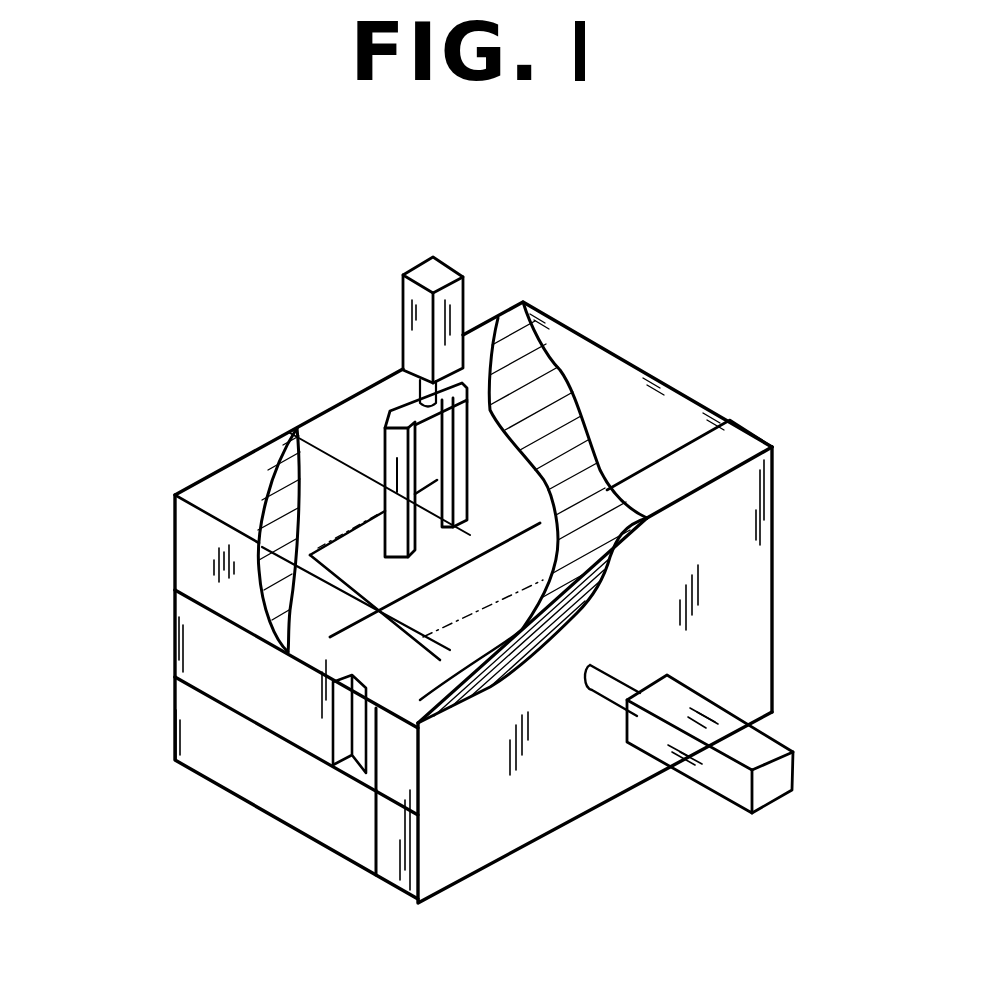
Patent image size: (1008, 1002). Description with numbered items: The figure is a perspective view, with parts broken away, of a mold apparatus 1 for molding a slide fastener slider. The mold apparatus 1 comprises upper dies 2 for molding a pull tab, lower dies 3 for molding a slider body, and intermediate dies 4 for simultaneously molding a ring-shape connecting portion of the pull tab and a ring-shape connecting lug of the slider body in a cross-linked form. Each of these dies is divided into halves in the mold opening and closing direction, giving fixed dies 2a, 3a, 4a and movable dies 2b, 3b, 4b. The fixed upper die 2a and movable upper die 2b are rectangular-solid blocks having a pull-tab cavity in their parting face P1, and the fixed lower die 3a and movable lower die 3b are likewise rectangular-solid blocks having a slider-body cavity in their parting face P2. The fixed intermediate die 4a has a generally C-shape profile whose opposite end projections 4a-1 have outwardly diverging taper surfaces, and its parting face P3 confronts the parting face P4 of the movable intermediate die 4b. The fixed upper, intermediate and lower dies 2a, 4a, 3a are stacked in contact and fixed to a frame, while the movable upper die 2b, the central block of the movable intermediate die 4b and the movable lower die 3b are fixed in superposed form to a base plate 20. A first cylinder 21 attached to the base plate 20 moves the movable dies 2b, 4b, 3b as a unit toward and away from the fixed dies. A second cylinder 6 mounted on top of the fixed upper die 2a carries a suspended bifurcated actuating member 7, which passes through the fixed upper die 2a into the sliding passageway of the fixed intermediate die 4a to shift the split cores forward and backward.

The mold apparatus 1 is at (231, 399).
The upper dies 2 is at (174, 540).
The fixed upper die 2a is at (570, 363).
The movable upper die 2b is at (673, 417).
The lower dies 3 is at (164, 705).
The fixed lower die 3a is at (188, 736).
The movable lower die 3b is at (365, 845).
The intermediate dies 4 is at (171, 628).
The fixed intermediate die 4a is at (247, 690).
The opposite end projections 4a-1 is at (276, 722).
The movable intermediate die 4b is at (365, 778).
The second cylinder 6 is at (470, 298).
The bifurcated actuating member 7 is at (383, 447).
The base plate 20 is at (733, 557).
The first cylinder 21 is at (715, 770).
The parting face P1 is at (670, 376).
The parting face P2 is at (357, 673).
The parting face P3 is at (497, 552).
The parting face P4 is at (532, 517).